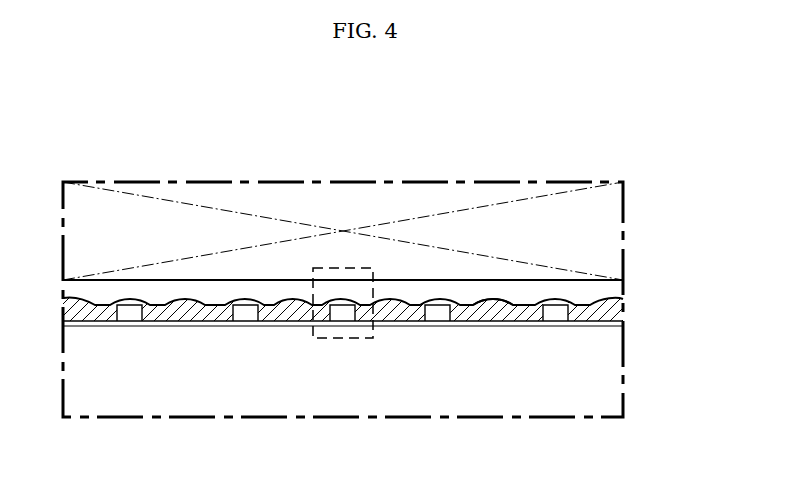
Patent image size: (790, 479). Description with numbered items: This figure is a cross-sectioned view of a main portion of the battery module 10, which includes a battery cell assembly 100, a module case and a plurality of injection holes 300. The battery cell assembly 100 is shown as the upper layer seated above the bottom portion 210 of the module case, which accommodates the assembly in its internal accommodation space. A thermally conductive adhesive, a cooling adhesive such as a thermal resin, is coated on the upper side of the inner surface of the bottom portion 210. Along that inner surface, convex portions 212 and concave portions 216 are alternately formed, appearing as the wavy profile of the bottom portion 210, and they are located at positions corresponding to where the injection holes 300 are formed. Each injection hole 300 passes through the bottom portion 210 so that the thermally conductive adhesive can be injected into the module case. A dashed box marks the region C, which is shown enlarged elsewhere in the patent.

The battery module 10 is at (211, 141).
The battery cell assembly 100 is at (610, 240).
The bottom portion 210 is at (357, 331).
The injection hole 300 is at (247, 318).
The convex portion 212 is at (494, 299).
The concave portion 216 is at (531, 307).
The enlarged region C is at (348, 339).